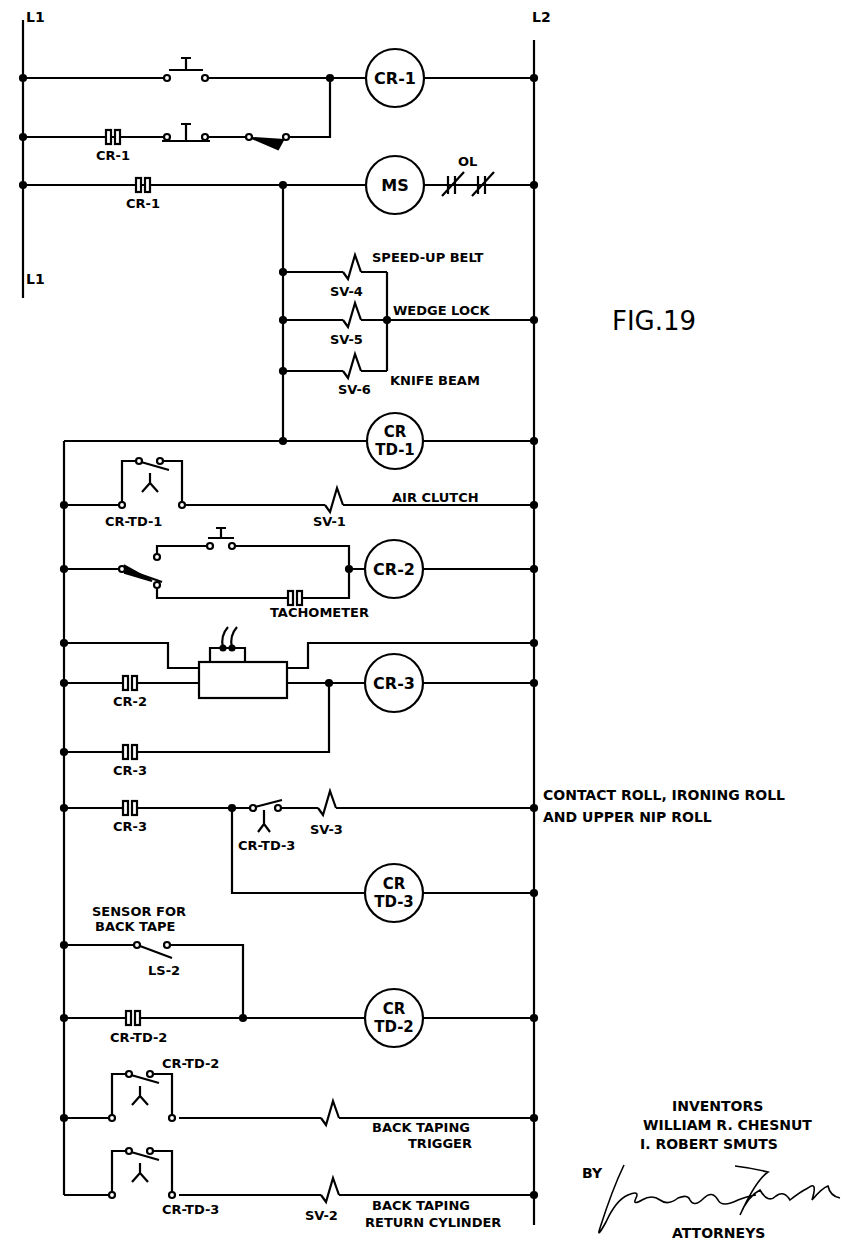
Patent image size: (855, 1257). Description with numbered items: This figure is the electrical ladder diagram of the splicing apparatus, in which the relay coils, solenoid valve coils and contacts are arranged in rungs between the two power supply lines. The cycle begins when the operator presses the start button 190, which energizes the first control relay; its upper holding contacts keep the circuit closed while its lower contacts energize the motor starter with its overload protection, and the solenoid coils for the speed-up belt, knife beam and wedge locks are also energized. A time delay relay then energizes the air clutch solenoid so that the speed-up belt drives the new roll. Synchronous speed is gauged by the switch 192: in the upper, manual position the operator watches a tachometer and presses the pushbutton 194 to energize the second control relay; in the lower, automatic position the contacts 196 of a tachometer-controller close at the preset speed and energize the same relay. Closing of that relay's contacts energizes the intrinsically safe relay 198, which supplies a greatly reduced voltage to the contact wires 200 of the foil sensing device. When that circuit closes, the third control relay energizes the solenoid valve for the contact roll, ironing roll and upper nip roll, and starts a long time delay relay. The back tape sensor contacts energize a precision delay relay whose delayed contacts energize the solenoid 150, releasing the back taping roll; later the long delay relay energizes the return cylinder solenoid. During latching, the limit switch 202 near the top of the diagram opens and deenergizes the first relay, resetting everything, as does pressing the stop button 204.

The solenoid 150 is at (322, 1112).
The start button 190 is at (200, 68).
The switch 192 is at (160, 575).
The pushbutton 194 is at (220, 550).
The contacts of tachometer-controller 196 is at (286, 592).
The intrinsically safe relay 198 is at (222, 698).
The contact wires 200 is at (237, 627).
The limit switch 202 is at (266, 129).
The stop button 204 is at (186, 143).